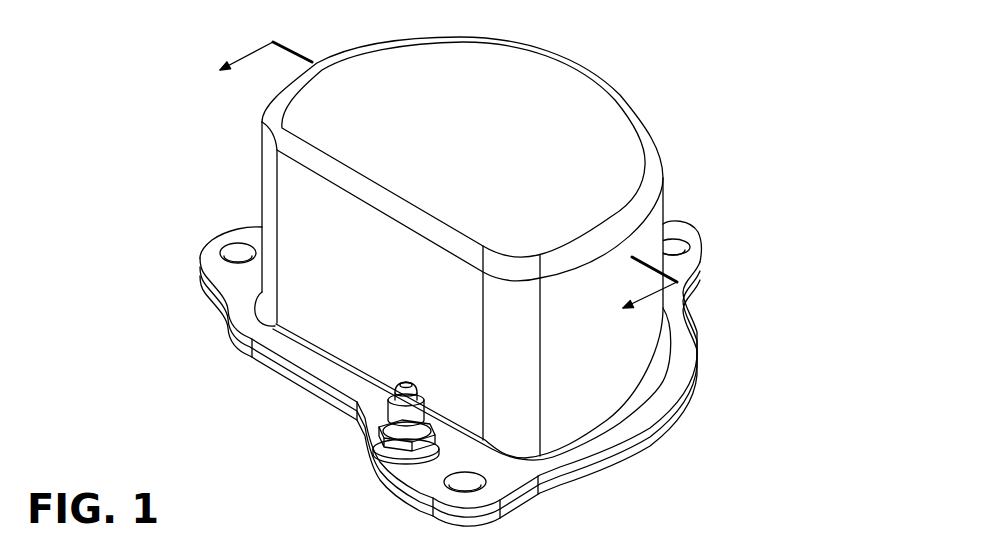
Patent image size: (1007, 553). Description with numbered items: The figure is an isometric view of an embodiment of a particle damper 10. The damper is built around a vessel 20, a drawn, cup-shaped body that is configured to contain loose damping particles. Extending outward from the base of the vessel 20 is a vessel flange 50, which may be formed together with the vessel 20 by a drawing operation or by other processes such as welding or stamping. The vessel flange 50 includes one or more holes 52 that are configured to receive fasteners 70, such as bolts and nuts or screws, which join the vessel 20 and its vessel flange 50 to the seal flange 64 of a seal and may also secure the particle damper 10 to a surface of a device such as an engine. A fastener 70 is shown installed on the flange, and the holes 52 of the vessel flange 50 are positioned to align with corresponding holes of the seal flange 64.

The particle damper 10 is at (680, 58).
The vessel 20 is at (260, 125).
The vessel flange 50 is at (670, 385).
The holes 52 is at (227, 240).
The seal flange 64 is at (640, 455).
The fastener 70 is at (373, 440).